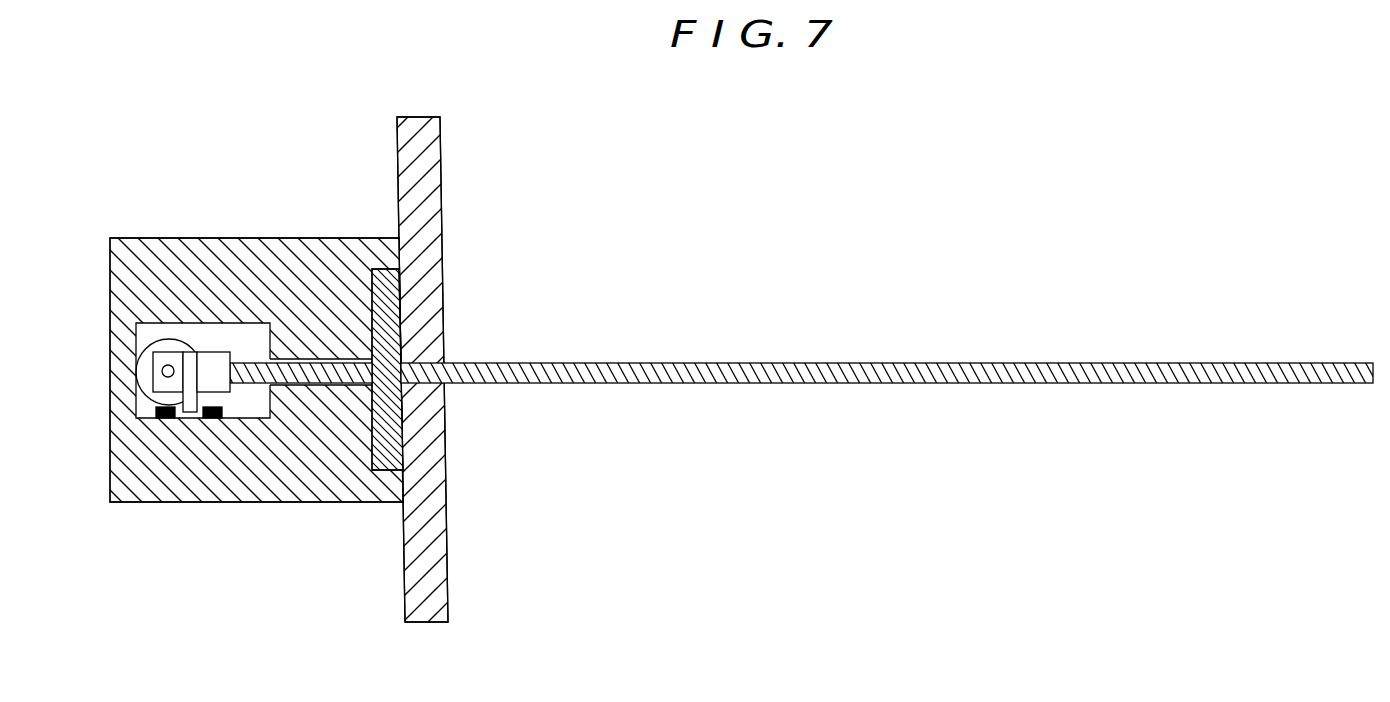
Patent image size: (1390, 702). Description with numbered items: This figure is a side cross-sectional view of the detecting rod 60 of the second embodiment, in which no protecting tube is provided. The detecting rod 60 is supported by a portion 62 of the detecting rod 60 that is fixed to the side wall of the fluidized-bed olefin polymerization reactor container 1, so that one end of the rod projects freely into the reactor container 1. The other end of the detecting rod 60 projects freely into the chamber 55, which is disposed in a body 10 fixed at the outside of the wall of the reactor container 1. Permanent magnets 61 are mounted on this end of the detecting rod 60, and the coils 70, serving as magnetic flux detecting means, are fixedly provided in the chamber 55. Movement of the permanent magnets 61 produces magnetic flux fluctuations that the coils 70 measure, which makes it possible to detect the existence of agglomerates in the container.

The fluidized-bed olefin polymerization reactor container 1 is at (397, 160).
The body 10 is at (291, 238).
The chamber 55 is at (243, 335).
The detecting rod 60 is at (840, 363).
The permanent magnets 61 is at (190, 358).
The portion of the detecting rod 62 is at (385, 300).
The coils 70 is at (150, 353).